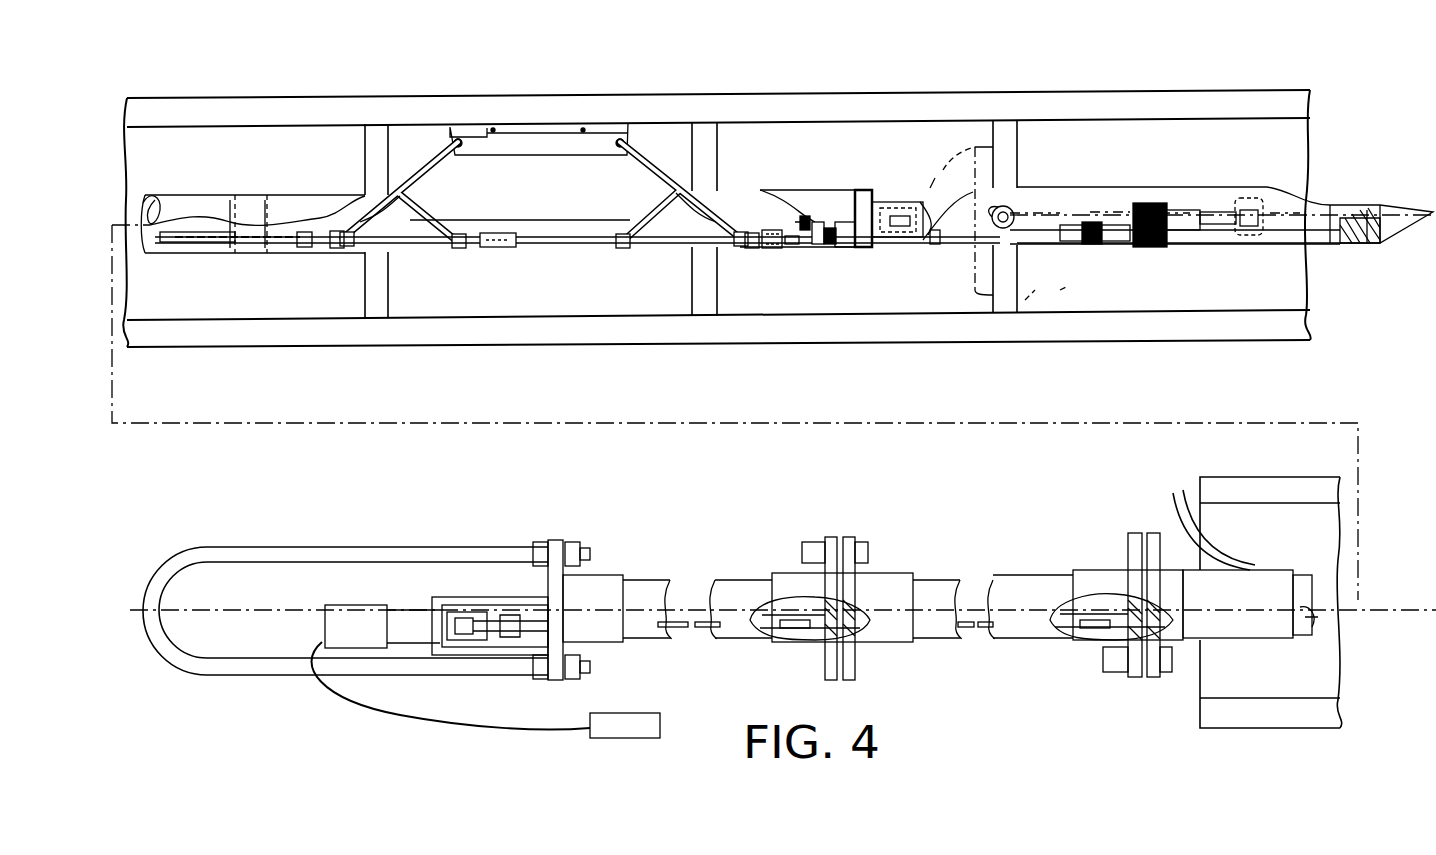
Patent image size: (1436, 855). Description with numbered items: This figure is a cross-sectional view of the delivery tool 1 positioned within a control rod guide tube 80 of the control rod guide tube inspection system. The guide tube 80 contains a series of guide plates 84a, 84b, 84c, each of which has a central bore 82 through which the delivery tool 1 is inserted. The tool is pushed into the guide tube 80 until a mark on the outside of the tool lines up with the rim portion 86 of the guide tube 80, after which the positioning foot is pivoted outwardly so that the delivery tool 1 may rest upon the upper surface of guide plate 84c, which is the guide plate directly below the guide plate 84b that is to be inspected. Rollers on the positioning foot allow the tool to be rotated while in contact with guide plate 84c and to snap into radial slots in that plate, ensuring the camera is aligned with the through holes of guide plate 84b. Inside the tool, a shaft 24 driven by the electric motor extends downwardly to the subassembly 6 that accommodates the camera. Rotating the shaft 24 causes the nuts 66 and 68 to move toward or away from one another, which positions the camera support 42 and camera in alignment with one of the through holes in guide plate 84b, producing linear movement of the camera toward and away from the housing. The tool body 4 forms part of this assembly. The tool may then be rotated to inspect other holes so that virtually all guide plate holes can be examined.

The delivery tool 1 is at (1080, 655).
The tool body 4 is at (1152, 187).
The subassembly 6 is at (812, 190).
The shaft 24 is at (552, 250).
The camera support 42 is at (542, 140).
The nut 66 is at (340, 255).
The nut 68 is at (745, 250).
The control rod guide tube 80 is at (577, 95).
The central bore 82 is at (720, 200).
The guide plate 84a is at (375, 318).
The guide plate 84b is at (700, 316).
The guide plate 84c is at (1008, 312).
The rim portion 86 is at (1200, 712).